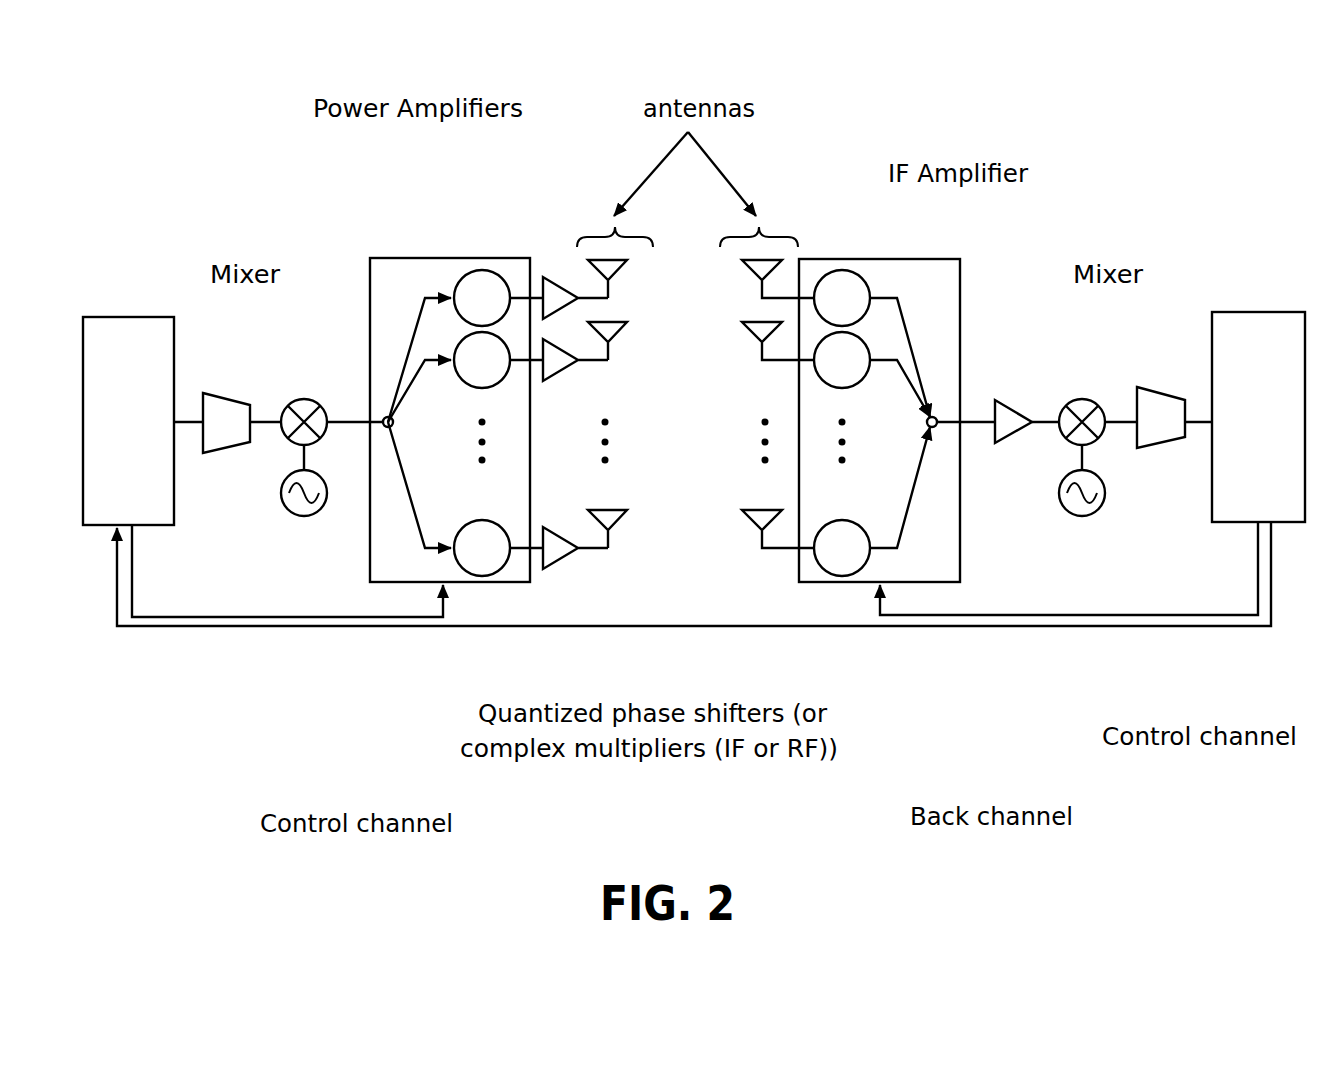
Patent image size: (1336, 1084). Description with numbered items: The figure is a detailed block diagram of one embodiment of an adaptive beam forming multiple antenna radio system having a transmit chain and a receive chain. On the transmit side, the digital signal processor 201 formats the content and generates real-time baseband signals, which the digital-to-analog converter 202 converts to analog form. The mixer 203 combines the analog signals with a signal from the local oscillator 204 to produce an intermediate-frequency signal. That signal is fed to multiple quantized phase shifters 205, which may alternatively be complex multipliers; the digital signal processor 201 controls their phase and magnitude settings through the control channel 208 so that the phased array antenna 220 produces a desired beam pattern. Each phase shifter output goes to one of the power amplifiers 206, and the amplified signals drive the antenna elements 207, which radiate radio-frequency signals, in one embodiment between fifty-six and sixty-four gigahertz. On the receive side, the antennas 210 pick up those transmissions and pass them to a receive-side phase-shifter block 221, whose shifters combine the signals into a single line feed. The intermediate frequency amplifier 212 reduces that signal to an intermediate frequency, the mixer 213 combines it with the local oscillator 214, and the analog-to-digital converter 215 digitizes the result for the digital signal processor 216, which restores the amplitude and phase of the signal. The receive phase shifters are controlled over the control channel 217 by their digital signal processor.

The digital signal processor 201 is at (128, 421).
The digital-to-analog converter 202 is at (226, 439).
The mixer 203 is at (294, 396).
The local oscillator 204 is at (277, 521).
The phase shifters 205 is at (787, 595).
The power amplifiers 206 is at (548, 259).
The antenna elements 207 is at (578, 357).
The control channel 208 is at (310, 623).
The antennas 210 is at (793, 356).
The intermediate frequency amplifier 212 is at (1001, 374).
The mixer 213 is at (1084, 389).
The local oscillator 214 is at (1065, 516).
The analog-to-digital converter 215 is at (1157, 436).
The digital signal processor 216 is at (1258, 417).
The control channel 217 is at (1125, 621).
The phased array antenna 220 is at (975, 787).
The receive phase shifter block 221 is at (879, 420).